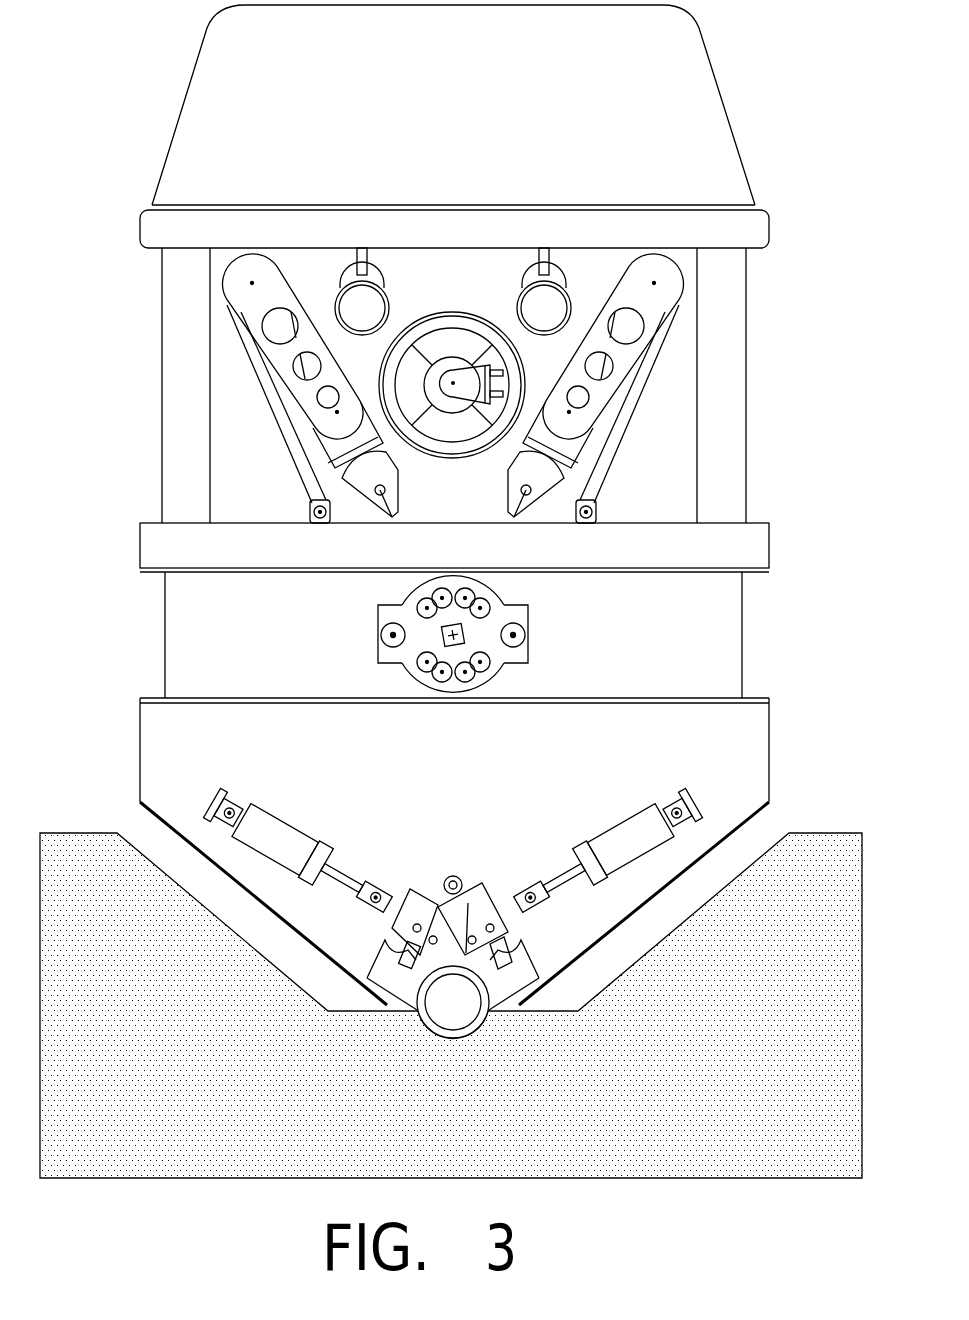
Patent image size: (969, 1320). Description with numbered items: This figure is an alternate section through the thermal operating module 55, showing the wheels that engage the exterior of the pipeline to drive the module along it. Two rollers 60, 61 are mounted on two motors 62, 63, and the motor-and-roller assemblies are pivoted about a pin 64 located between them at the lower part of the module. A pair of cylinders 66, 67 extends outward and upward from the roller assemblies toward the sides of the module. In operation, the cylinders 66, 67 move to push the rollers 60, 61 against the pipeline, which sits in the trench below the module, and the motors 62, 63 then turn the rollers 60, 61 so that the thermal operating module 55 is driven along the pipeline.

The thermal operating module 55 is at (763, 728).
The roller 60 is at (506, 995).
The roller 61 is at (387, 957).
The motor 62 is at (487, 888).
The motor 63 is at (427, 888).
The pin 64 is at (455, 877).
The cylinder 66 is at (607, 835).
The cylinder 67 is at (278, 822).